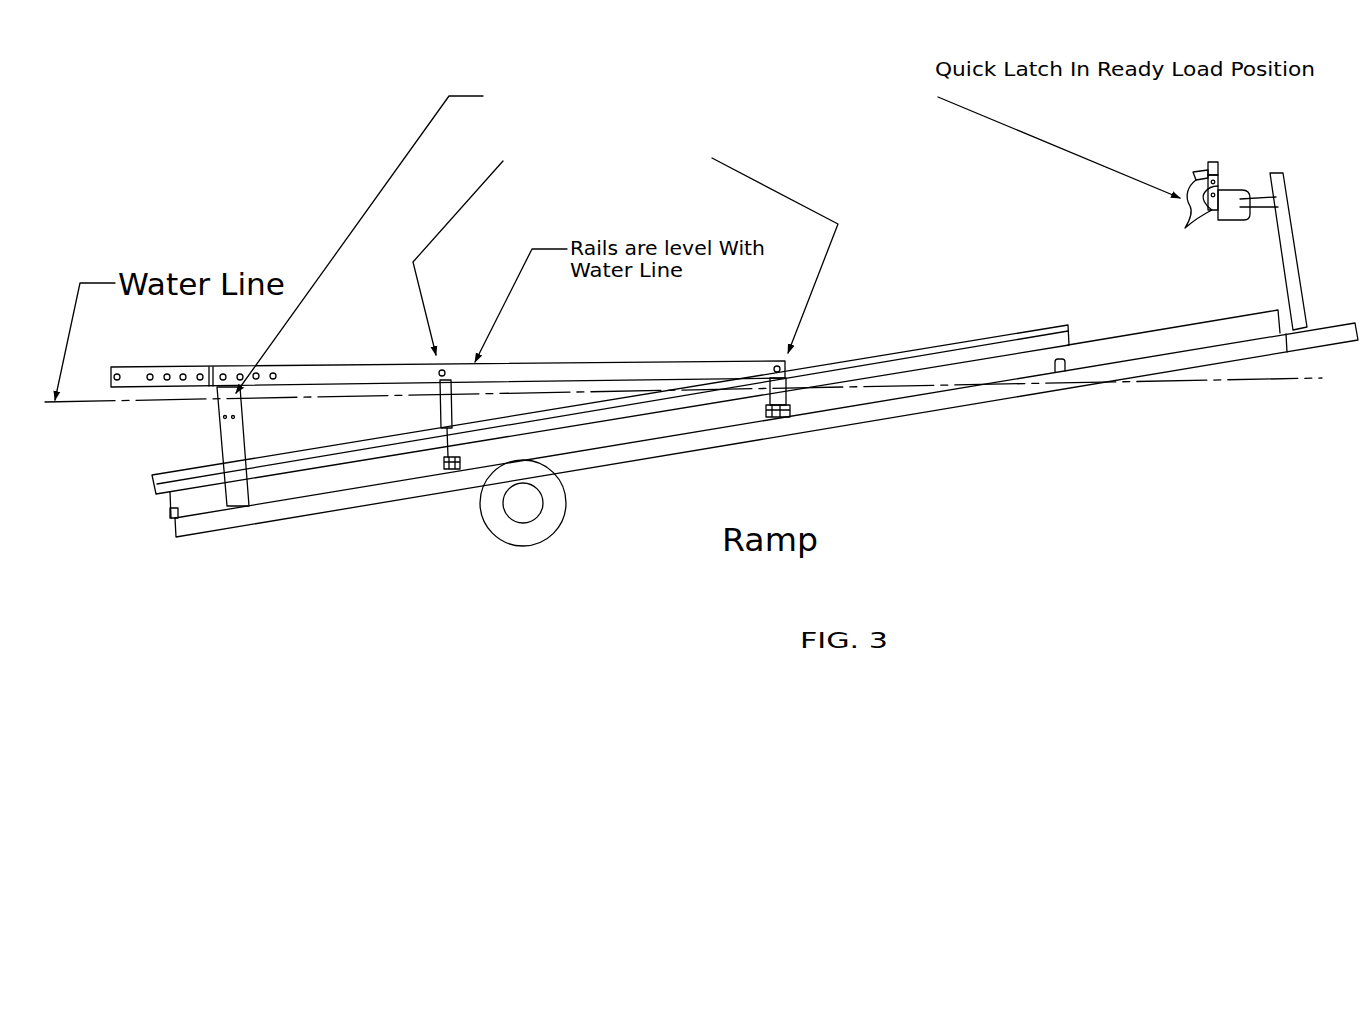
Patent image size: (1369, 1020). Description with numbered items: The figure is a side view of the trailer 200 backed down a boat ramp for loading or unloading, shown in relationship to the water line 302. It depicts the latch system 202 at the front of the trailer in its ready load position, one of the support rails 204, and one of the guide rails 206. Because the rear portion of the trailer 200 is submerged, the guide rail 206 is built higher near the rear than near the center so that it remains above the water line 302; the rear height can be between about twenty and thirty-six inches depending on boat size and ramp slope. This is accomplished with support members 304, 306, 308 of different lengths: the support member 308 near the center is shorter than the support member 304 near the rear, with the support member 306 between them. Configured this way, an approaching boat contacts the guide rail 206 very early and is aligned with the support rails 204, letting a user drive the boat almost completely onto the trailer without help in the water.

The trailer 200 is at (802, 178).
The latch system 202 is at (1236, 192).
The support rail 204 is at (152, 477).
The guide rail 206 is at (333, 366).
The water line 302 is at (1208, 380).
The support member 304 is at (238, 504).
The support member 306 is at (449, 466).
The support member 308 is at (778, 419).